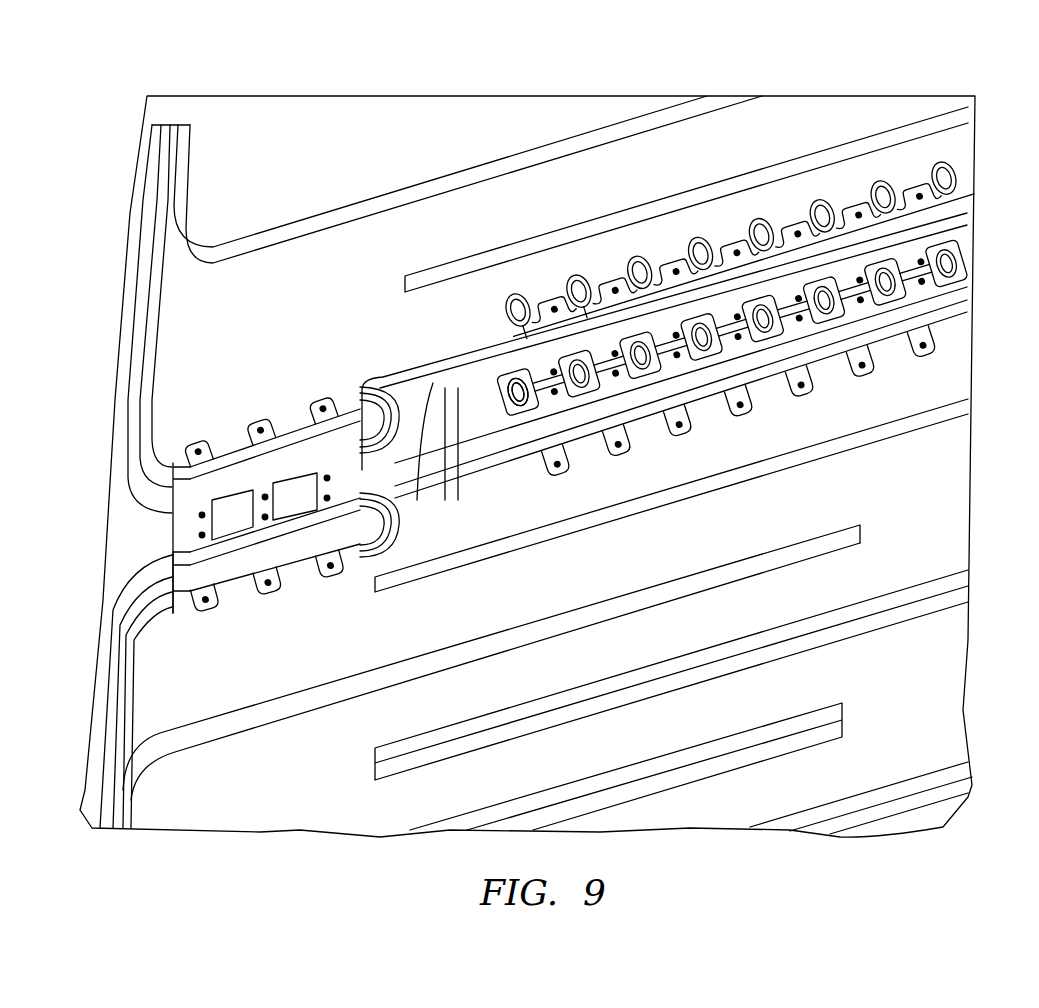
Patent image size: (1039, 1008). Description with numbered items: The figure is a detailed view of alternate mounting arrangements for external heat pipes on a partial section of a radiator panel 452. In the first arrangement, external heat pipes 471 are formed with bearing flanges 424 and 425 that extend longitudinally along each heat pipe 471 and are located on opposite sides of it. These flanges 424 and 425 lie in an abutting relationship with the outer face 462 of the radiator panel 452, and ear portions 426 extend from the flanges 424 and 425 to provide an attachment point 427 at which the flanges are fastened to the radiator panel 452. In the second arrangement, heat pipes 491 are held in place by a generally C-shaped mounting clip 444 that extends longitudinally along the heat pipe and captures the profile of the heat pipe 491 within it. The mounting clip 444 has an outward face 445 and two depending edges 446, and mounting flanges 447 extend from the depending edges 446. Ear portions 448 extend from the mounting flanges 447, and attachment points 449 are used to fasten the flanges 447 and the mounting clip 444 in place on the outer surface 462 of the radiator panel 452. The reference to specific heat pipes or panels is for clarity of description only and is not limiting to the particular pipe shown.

The radiator panel 452 is at (755, 89).
The outer face of radiator panel 462 is at (357, 168).
The attachment point 427 is at (603, 292).
The ear portions 426 is at (570, 290).
The bearing flange 424 is at (533, 330).
The bearing flange 425 is at (645, 352).
The heat pipe 491 is at (362, 385).
The external heat pipe 471 is at (432, 470).
The outward face 445 is at (208, 486).
The depending edges 446 is at (236, 445).
The mounting flange 447 is at (175, 517).
The mounting clip 444 is at (193, 600).
The ear portions 448 is at (220, 572).
The attachment points 449 is at (252, 598).